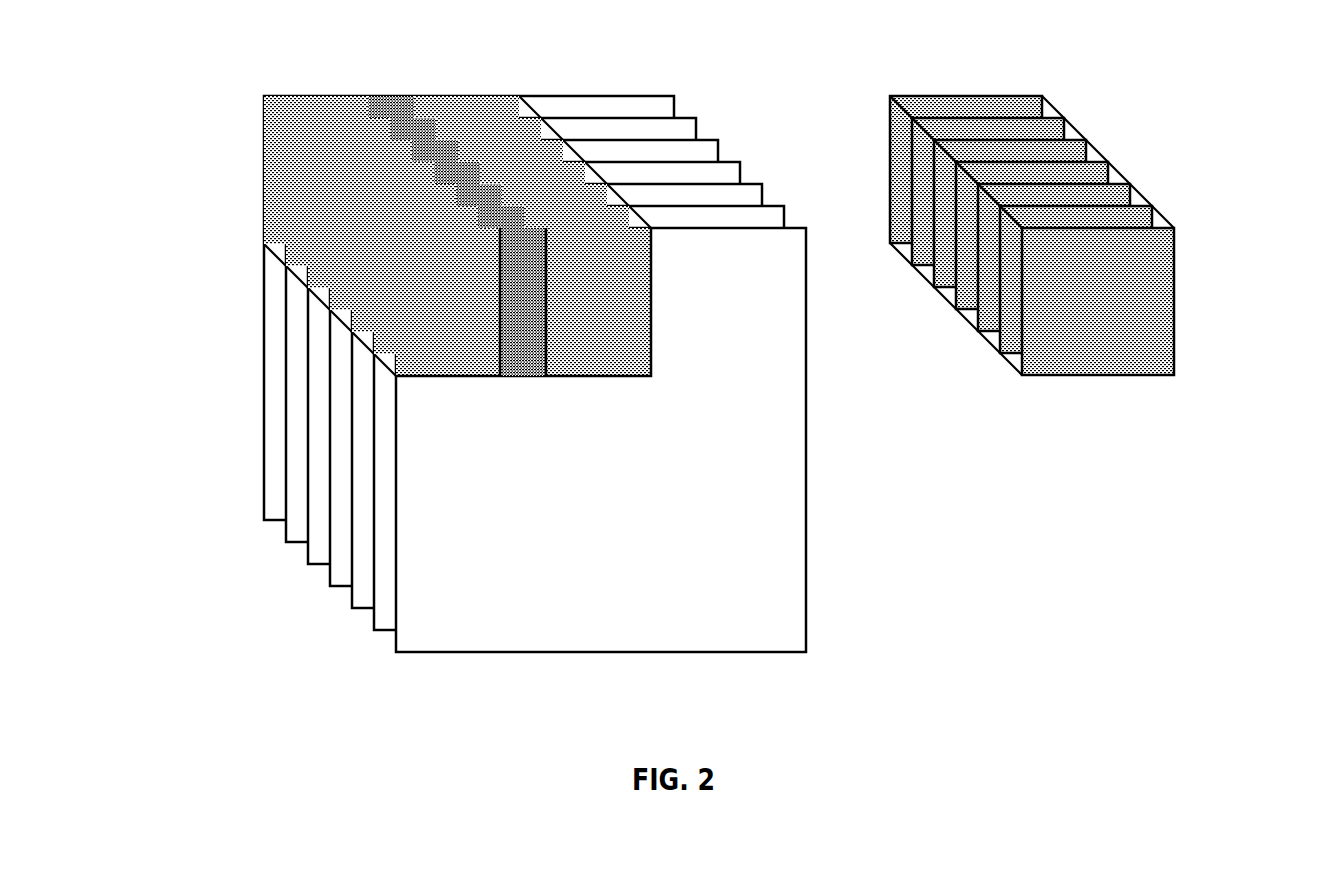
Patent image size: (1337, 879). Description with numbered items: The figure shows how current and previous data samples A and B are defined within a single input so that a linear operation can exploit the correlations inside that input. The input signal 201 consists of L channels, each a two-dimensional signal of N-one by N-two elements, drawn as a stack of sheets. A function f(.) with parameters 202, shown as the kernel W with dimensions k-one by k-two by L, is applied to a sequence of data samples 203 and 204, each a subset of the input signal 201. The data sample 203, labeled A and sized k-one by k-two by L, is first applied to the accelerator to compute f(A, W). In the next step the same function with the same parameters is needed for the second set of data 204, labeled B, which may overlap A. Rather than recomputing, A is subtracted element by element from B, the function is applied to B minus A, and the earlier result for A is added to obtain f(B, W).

The input signal 201 is at (264, 460).
The parameters 202 is at (1173, 292).
The data sample 203 is at (264, 170).
The second set of data 204 is at (467, 96).